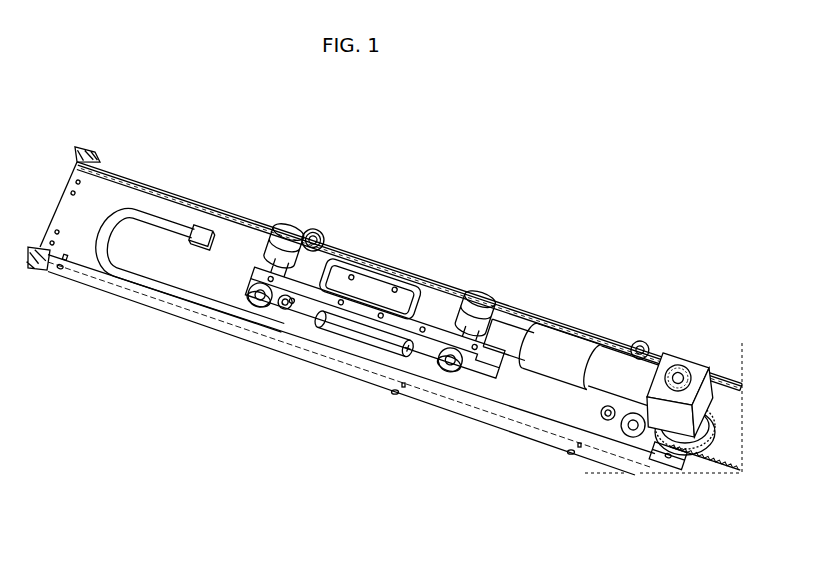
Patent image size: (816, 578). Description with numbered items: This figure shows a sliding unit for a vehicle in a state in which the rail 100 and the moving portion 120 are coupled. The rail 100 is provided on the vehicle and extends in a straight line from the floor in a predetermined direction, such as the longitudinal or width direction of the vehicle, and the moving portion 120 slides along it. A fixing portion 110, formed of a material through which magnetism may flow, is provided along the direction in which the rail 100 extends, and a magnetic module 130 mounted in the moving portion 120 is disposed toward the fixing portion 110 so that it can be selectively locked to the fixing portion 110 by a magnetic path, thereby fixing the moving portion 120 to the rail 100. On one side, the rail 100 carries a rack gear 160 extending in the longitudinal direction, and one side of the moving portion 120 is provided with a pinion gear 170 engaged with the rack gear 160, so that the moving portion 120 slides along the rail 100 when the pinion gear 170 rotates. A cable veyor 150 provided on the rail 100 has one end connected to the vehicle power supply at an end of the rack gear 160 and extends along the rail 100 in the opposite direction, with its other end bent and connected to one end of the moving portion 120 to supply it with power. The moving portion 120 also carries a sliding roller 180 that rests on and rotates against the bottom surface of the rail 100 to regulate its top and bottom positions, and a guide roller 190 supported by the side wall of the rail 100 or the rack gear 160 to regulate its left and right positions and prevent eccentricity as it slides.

The rail 100 is at (93, 275).
The fixing portion 110 is at (123, 195).
The moving portion 120 is at (500, 345).
The magnetic module 130 is at (377, 290).
The cable veyor 150 is at (170, 227).
The rack gear 160 is at (672, 462).
The pinion gear 170 is at (705, 452).
The sliding roller 180 is at (288, 228).
The guide roller 190 is at (318, 230).